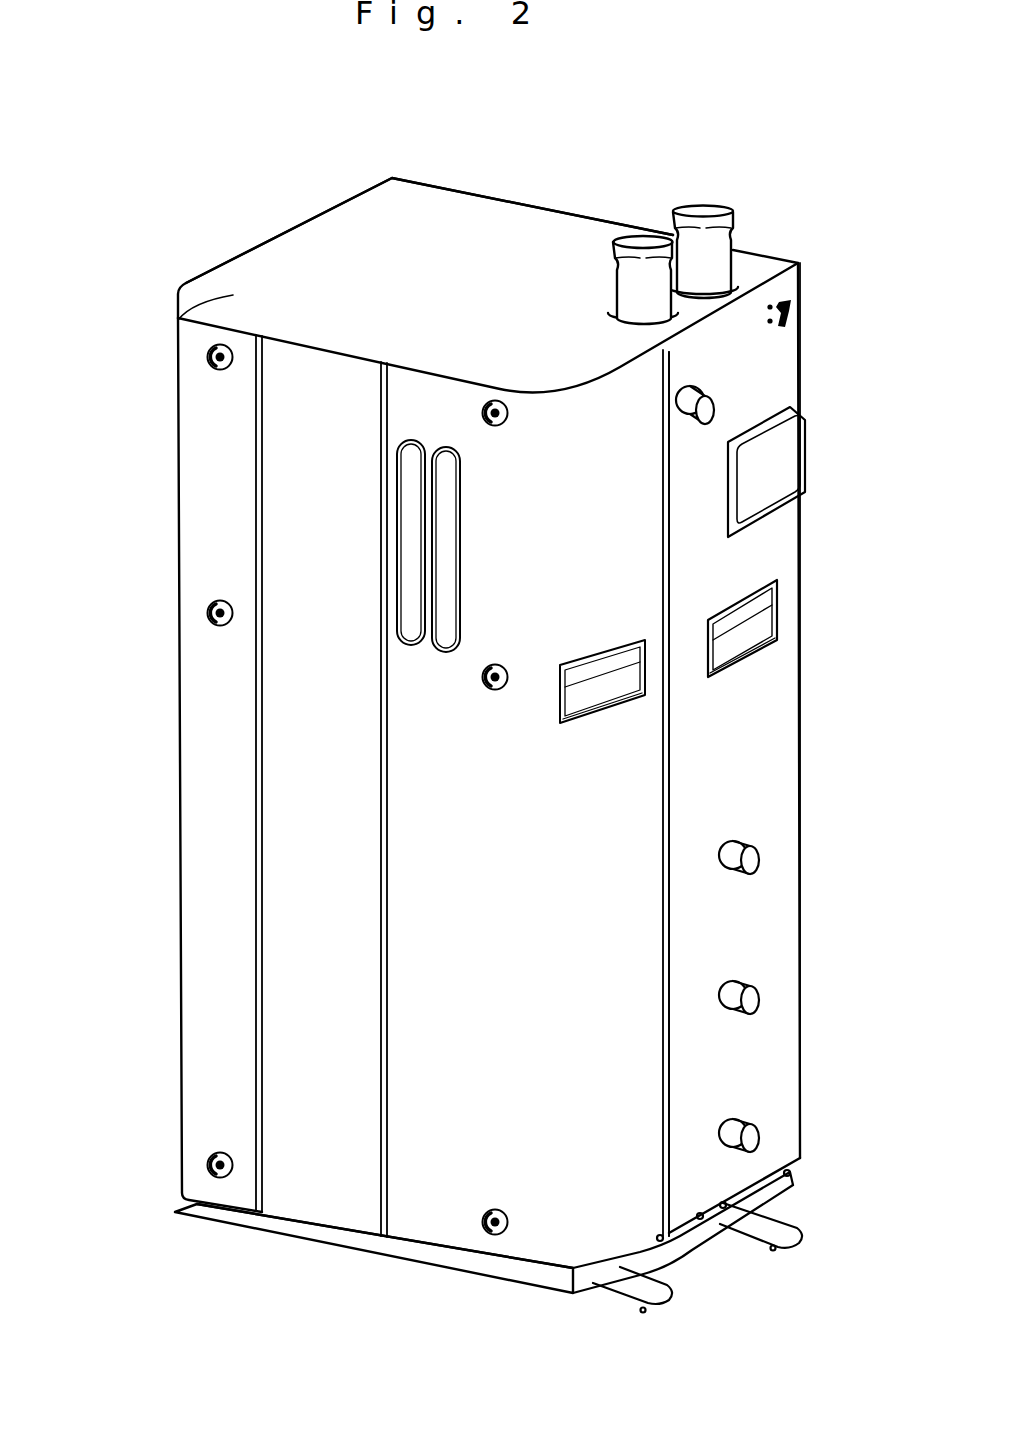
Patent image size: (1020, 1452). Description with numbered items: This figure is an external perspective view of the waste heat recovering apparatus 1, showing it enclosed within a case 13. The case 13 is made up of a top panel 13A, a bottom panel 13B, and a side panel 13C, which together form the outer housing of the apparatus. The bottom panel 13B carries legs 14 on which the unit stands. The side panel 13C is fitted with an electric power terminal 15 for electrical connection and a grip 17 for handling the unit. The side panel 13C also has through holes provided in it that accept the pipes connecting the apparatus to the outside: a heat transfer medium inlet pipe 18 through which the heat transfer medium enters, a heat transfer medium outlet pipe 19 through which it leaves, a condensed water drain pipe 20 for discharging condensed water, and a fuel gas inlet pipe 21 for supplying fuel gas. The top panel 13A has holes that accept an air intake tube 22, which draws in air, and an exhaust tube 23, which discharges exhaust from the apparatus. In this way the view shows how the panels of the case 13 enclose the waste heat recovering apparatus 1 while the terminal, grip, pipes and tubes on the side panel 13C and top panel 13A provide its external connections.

The waste heat recovering apparatus 1 is at (152, 927).
The case 13 is at (813, 779).
The top panel 13A is at (178, 322).
The bottom panel 13B is at (310, 1228).
The side panel 13C is at (778, 719).
The legs 14 is at (643, 1287).
The electric power terminal 15 is at (778, 477).
The grip 17 is at (748, 624).
The heat transfer medium inlet pipe 18 is at (752, 1138).
The heat transfer medium outlet pipe 19 is at (752, 1000).
The condensed water drain pipe 20 is at (752, 858).
The fuel gas inlet pipe 21 is at (707, 405).
The air intake tube 22 is at (638, 250).
The exhaust tube 23 is at (722, 240).